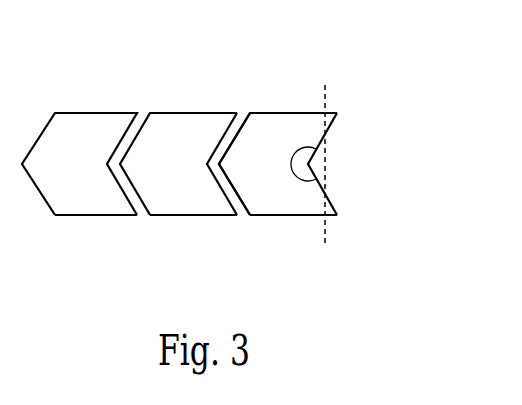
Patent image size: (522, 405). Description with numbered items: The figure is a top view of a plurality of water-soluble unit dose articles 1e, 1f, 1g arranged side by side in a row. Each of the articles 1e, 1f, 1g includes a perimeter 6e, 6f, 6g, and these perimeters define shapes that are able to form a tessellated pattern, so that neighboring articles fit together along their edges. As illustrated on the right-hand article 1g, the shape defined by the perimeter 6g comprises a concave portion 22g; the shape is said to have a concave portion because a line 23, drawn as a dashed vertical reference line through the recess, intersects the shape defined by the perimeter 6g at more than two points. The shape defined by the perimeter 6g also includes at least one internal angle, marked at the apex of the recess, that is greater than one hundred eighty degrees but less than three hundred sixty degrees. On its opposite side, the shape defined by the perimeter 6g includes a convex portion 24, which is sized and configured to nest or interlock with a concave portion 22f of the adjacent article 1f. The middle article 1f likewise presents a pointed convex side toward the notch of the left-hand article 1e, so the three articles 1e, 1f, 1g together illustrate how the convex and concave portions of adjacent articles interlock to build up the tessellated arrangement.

The water-soluble unit dose article 1e is at (80, 127).
The water-soluble unit dose article 1f is at (157, 125).
The water-soluble unit dose article 1g is at (265, 125).
The perimeter 6e is at (63, 217).
The perimeter 6f is at (155, 217).
The perimeter 6g is at (256, 217).
The concave portion 22f is at (213, 158).
The concave portion 22g is at (317, 163).
The line 23 is at (325, 103).
The convex portion 24 is at (221, 166).